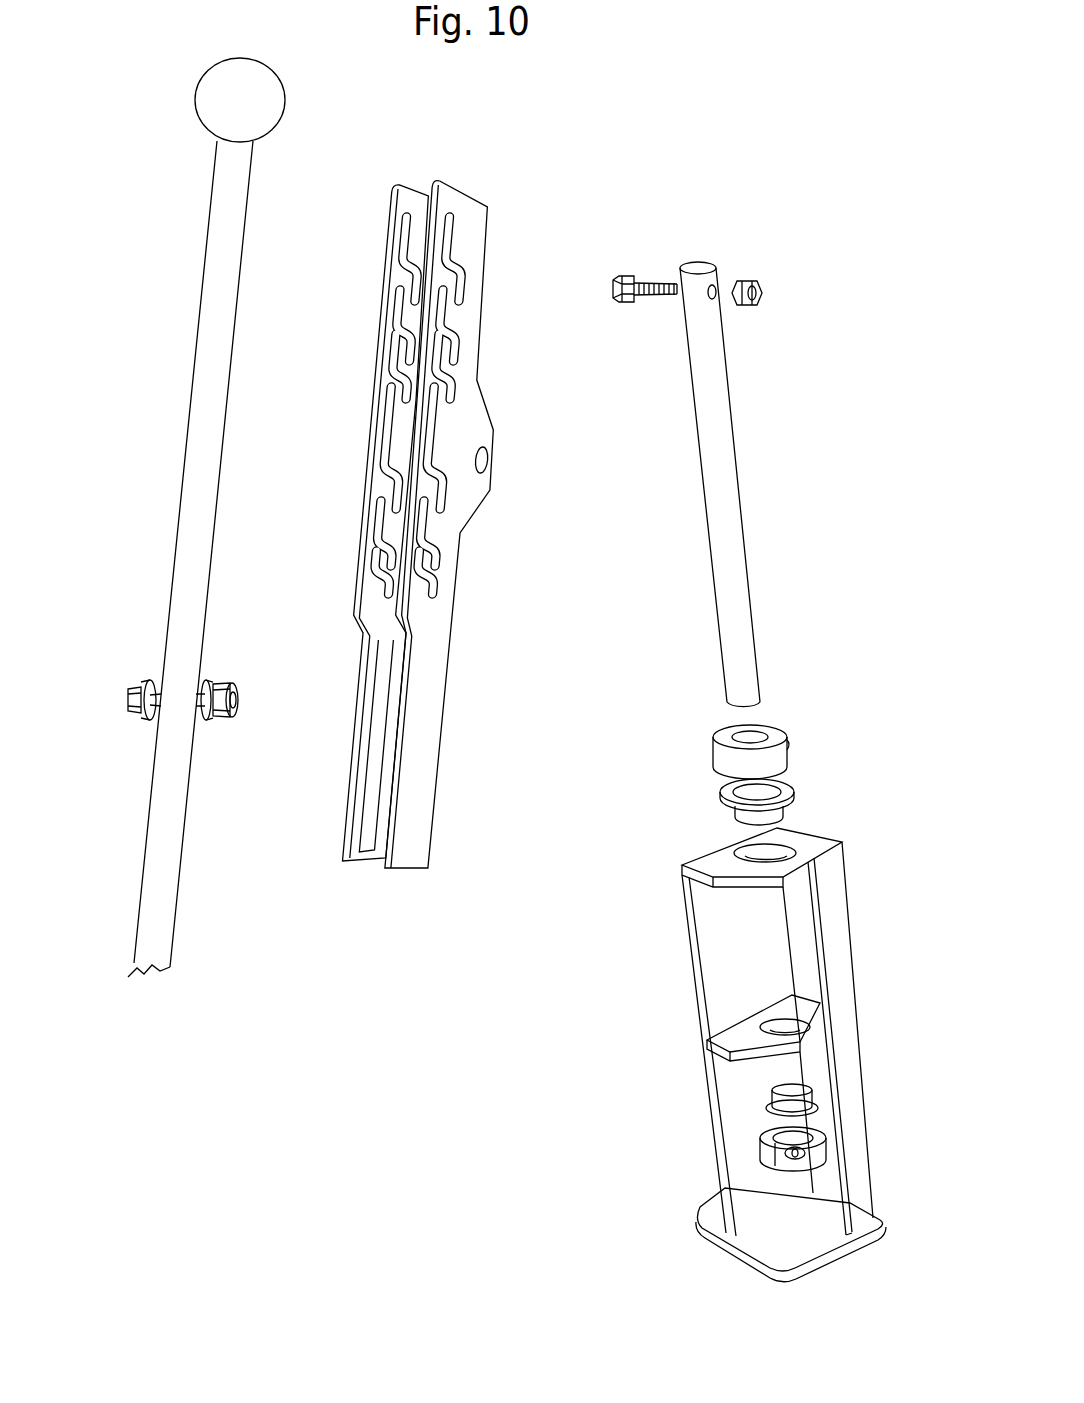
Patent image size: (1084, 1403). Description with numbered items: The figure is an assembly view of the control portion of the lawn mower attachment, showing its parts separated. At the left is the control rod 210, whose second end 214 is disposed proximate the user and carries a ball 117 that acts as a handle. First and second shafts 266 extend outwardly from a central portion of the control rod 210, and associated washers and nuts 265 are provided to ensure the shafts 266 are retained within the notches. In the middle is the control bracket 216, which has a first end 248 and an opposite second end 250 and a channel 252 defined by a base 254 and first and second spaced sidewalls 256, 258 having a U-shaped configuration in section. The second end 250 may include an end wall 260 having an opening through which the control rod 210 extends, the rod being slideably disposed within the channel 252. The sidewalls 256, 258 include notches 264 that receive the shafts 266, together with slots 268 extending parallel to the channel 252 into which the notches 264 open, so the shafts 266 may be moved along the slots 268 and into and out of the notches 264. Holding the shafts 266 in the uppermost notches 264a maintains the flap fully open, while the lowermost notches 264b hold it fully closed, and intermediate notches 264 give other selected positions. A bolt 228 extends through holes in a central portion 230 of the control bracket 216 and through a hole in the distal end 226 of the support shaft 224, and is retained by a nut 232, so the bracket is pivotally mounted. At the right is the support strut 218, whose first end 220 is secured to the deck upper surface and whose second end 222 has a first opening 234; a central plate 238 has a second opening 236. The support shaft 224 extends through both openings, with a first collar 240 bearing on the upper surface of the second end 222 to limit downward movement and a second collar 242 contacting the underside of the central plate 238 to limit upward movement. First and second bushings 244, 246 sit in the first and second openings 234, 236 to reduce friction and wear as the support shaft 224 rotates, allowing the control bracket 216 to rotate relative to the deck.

The ball 117 is at (272, 108).
The second end 214 is at (235, 208).
The control rod 210 is at (223, 517).
The washers and nuts 265 is at (185, 667).
The first and second shafts 266 is at (150, 688).
The control bracket 216 is at (430, 518).
The channel 252 is at (433, 178).
The first end 248 is at (479, 524).
The second end 250 is at (427, 556).
The slots 268 is at (446, 234).
The notches 264 is at (453, 400).
The uppermost notches 264a is at (461, 307).
The lowermost notches 264b is at (436, 597).
The central portion 230 is at (474, 433).
The second sidewall 258 is at (432, 742).
The first sidewall 256 is at (363, 748).
The base 254 is at (382, 797).
The end wall 260 is at (366, 870).
The support shaft 224 is at (741, 456).
The distal end 226 is at (706, 262).
The bolt 228 is at (651, 283).
The nut 232 is at (762, 292).
The first collar 240 is at (790, 734).
The first bushing 244 is at (795, 791).
The support strut 218 is at (783, 1052).
The second end 222 is at (768, 840).
The first opening 234 is at (772, 851).
The central plate 238 is at (728, 1004).
The second opening 236 is at (780, 1020).
The second bushing 246 is at (766, 1109).
The second collar 242 is at (762, 1150).
The first end 220 is at (814, 1243).